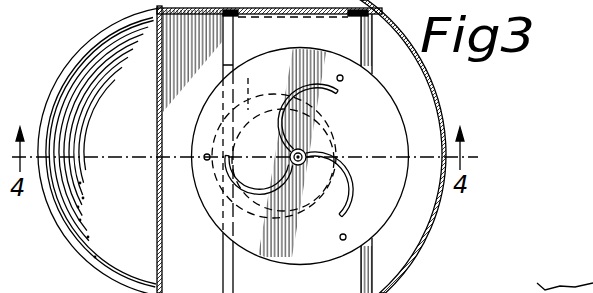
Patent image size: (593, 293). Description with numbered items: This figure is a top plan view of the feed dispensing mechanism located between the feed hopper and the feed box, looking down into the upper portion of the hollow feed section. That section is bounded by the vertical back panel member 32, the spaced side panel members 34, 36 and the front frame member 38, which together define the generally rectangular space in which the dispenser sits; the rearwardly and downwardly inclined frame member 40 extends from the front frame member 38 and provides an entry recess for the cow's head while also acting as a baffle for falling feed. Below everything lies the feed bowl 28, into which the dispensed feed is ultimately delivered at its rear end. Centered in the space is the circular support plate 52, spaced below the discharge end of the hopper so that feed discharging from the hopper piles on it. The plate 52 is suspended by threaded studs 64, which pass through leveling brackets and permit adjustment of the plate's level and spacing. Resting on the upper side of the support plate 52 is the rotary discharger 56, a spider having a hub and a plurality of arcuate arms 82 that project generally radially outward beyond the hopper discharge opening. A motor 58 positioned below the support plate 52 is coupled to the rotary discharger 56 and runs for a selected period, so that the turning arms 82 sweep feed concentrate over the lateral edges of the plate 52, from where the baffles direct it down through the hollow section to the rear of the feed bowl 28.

The feed bowl 28 is at (78, 68).
The vertical back panel member 32 is at (440, 100).
The side panel member 34 is at (192, 35).
The side panel member 36 is at (188, 291).
The frame member 38 is at (158, 244).
The rearwardly and downwardly inclined frame member 40 is at (172, 195).
The circular support plate 52 is at (213, 210).
The rotary discharger 56 is at (348, 165).
The motor 58 is at (253, 78).
The threaded stud 64 is at (342, 81).
The arcuate arms 82 is at (247, 181).